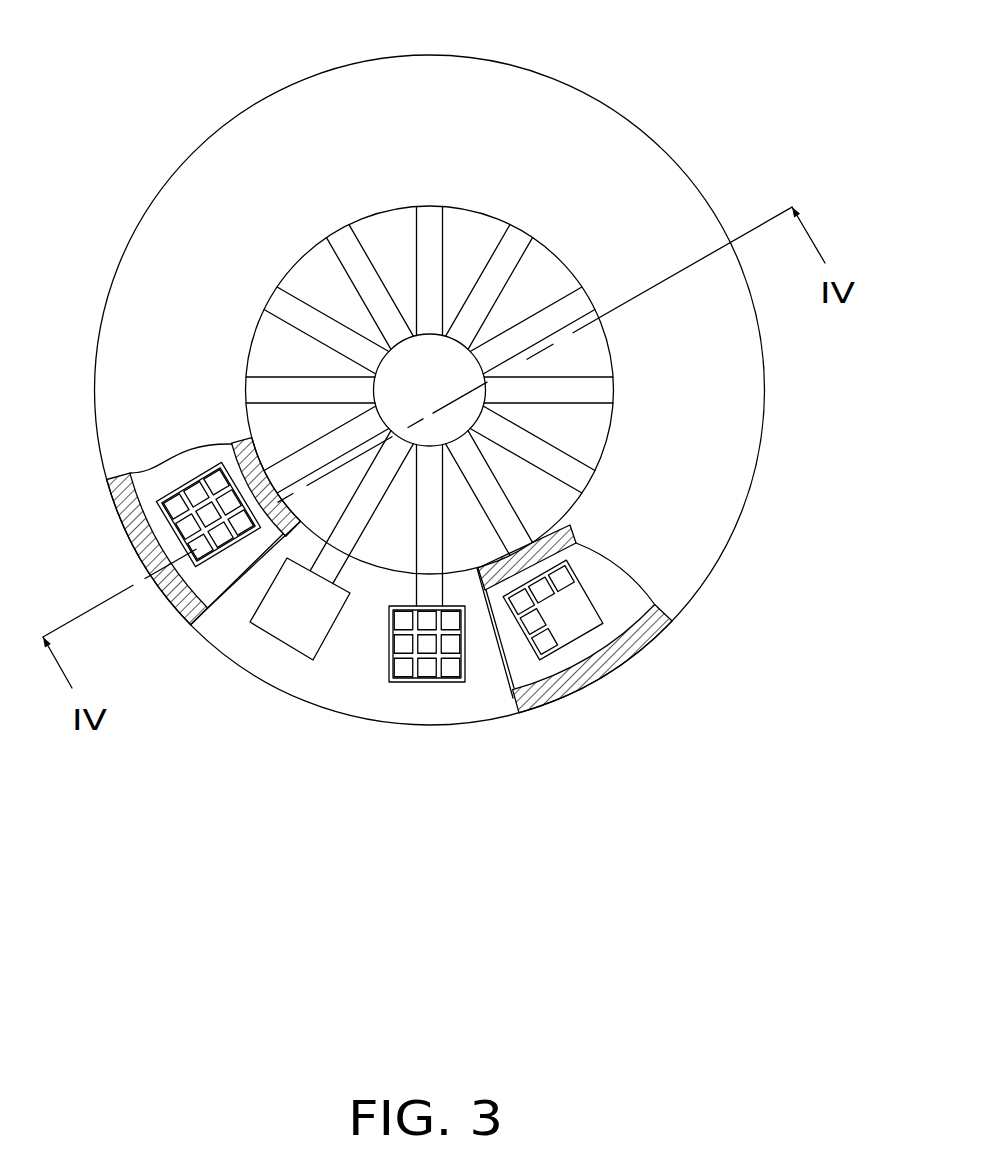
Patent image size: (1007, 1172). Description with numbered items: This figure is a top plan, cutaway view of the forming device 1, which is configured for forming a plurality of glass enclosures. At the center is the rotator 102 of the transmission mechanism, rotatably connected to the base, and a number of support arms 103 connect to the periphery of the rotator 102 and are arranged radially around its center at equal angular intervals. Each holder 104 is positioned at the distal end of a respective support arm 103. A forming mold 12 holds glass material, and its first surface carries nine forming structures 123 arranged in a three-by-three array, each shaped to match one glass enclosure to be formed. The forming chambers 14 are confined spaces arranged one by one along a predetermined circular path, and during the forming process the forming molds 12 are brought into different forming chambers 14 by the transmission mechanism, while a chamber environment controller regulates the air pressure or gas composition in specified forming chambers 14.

The forming device 1 is at (172, 62).
The rotator 102 is at (393, 373).
The support arms 103 is at (570, 470).
The holder 104 is at (287, 625).
The forming mold 12 is at (372, 696).
The forming structures 123 is at (370, 694).
The forming chambers 14 is at (124, 505).